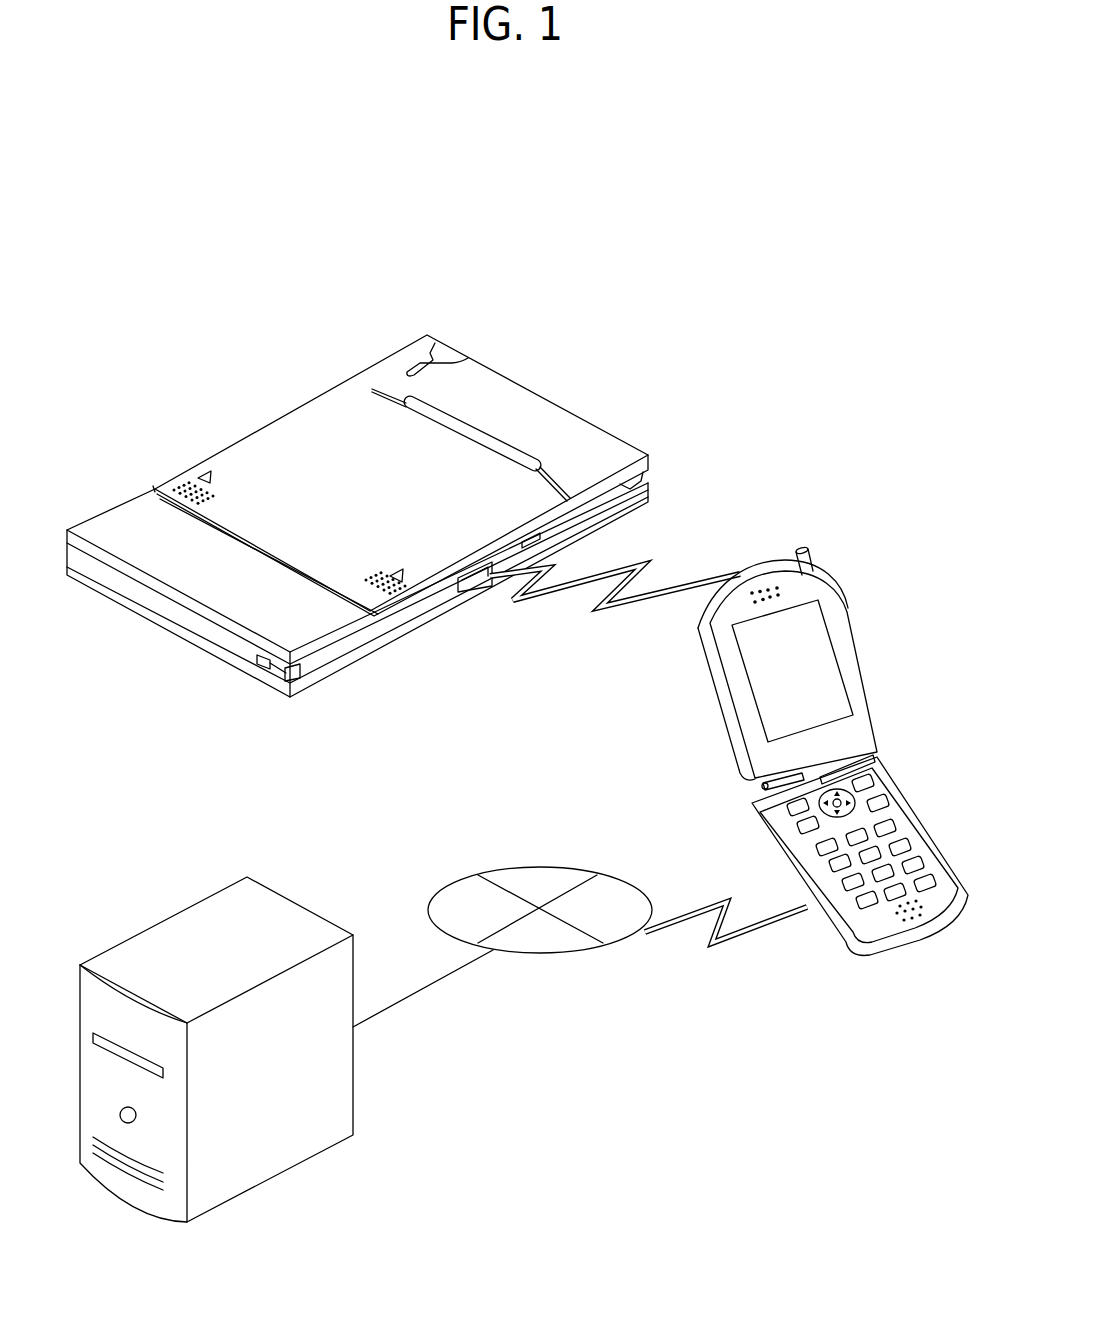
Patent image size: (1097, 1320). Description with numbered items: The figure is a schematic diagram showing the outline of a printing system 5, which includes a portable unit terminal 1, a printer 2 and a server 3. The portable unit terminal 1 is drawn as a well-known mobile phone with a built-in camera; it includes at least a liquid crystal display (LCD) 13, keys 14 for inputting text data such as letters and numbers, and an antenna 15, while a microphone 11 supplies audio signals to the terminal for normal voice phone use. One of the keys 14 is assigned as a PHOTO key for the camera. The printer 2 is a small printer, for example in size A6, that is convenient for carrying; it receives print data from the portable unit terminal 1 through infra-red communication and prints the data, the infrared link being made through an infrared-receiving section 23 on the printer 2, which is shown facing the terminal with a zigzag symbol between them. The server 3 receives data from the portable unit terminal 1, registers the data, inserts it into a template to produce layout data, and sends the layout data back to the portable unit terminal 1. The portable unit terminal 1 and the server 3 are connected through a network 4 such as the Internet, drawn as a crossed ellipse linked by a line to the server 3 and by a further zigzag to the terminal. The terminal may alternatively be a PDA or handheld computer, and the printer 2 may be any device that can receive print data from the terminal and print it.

The portable unit terminal 1 is at (833, 746).
The printer 2 is at (357, 496).
The server 3 is at (355, 1060).
The network 4 is at (558, 867).
The printing system 5 is at (465, 238).
The microphone 11 is at (928, 908).
The liquid crystal display (LCD) 13 is at (800, 668).
The keys 14 is at (887, 762).
The antenna 15 is at (814, 560).
The infrared-receiving section 23 is at (474, 590).